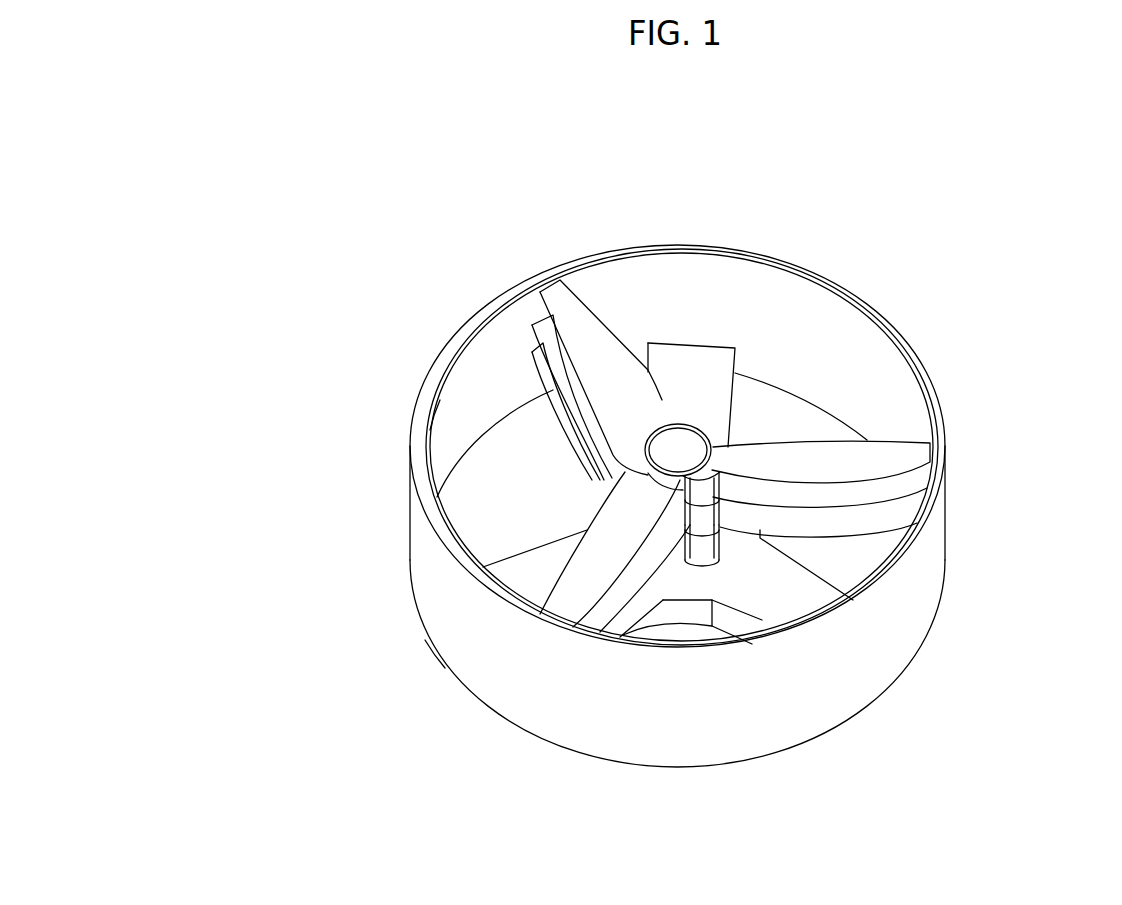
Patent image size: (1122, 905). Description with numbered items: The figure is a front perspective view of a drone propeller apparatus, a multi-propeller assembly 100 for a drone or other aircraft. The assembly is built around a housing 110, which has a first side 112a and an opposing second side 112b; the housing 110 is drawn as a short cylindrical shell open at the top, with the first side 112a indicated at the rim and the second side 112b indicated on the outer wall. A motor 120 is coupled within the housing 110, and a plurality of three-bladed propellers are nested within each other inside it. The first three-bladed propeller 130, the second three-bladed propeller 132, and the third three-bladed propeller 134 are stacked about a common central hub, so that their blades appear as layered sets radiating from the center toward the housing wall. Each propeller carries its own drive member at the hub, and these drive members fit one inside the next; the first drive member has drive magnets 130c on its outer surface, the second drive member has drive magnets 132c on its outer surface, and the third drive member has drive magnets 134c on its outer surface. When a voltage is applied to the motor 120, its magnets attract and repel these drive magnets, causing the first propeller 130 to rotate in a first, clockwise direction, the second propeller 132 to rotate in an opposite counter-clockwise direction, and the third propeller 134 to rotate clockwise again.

The multi-propeller assembly 100 is at (133, 145).
The housing 110 is at (453, 342).
The first side 112a is at (404, 368).
The second side 112b is at (409, 672).
The motor 120 is at (712, 372).
The three-bladed propeller 130 is at (895, 530).
The second three-bladed propeller 132 is at (913, 492).
The third three-bladed propeller 134 is at (923, 458).
The drive magnets 130c is at (700, 553).
The drive magnets 132c is at (683, 524).
The drive magnets 134c is at (690, 473).